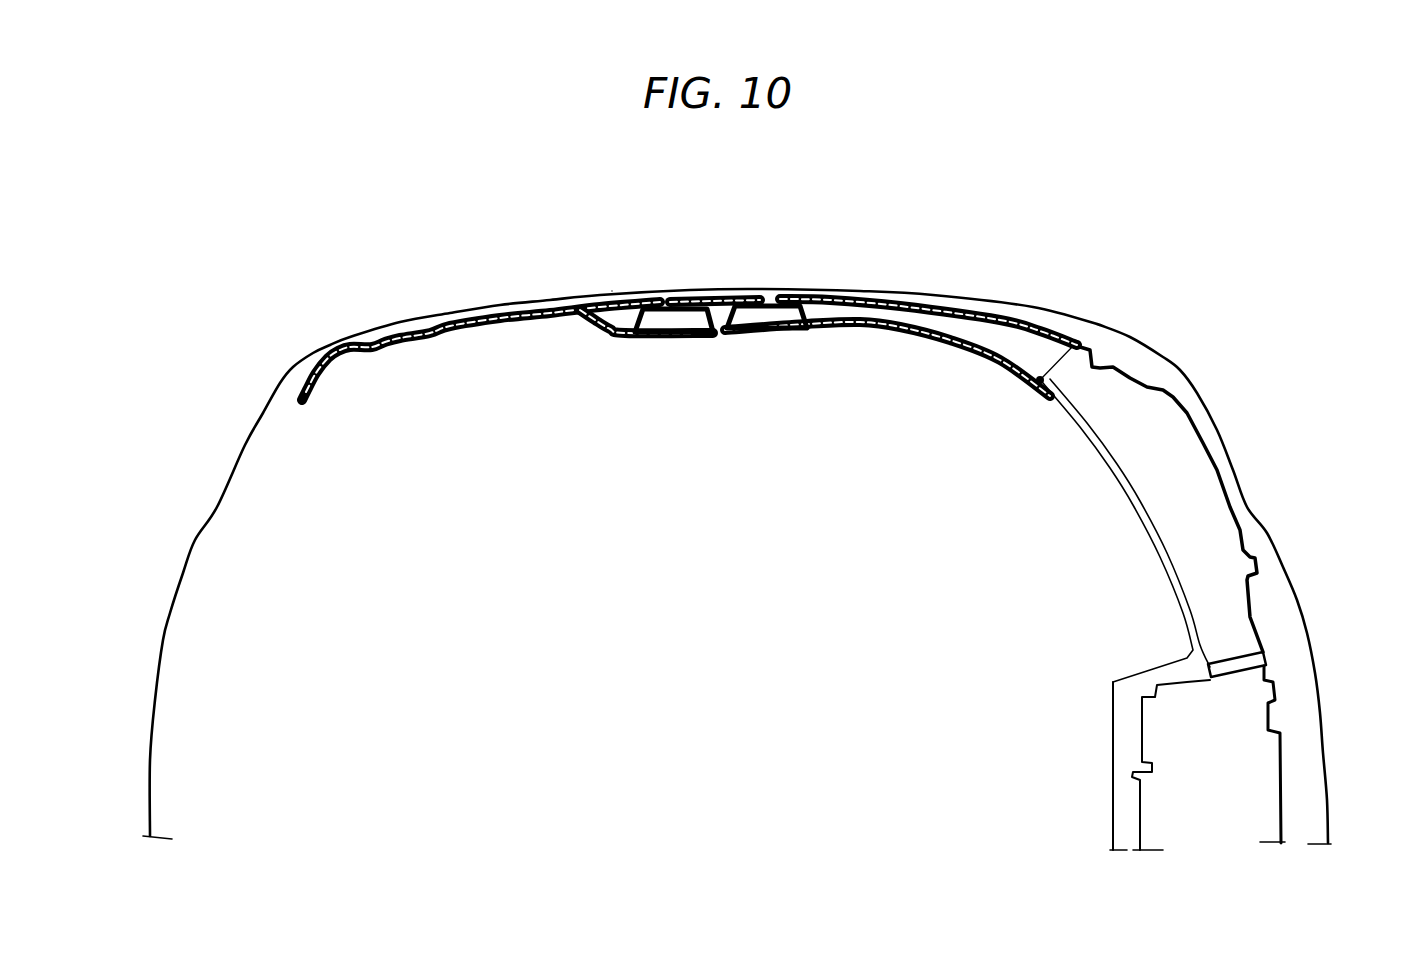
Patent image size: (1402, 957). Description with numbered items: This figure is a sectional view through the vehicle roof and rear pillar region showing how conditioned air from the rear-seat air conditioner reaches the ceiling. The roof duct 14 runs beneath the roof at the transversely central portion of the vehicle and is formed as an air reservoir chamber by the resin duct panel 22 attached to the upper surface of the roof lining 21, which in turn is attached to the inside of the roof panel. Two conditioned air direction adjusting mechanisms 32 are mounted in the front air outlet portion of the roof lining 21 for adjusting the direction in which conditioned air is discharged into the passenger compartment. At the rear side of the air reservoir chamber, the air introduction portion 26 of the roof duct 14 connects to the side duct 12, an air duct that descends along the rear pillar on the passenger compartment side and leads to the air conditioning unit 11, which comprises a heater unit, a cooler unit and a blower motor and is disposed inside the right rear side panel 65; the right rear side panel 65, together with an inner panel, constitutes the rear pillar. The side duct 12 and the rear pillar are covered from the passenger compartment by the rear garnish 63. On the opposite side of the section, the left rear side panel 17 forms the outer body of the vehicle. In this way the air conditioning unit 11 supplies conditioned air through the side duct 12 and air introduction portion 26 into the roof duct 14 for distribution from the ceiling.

The air conditioning unit 11 is at (1283, 767).
The side duct 12 is at (1232, 500).
The roof duct 14 is at (608, 282).
The left rear side panel 17 is at (190, 538).
The roof lining 21 is at (400, 332).
The duct panel 22 is at (822, 300).
The air introduction portion 26 is at (1017, 318).
The conditioned air direction adjusting mechanism 32 is at (663, 338).
The rear garnish 63 is at (1133, 506).
The right rear side panel 65 is at (1300, 611).